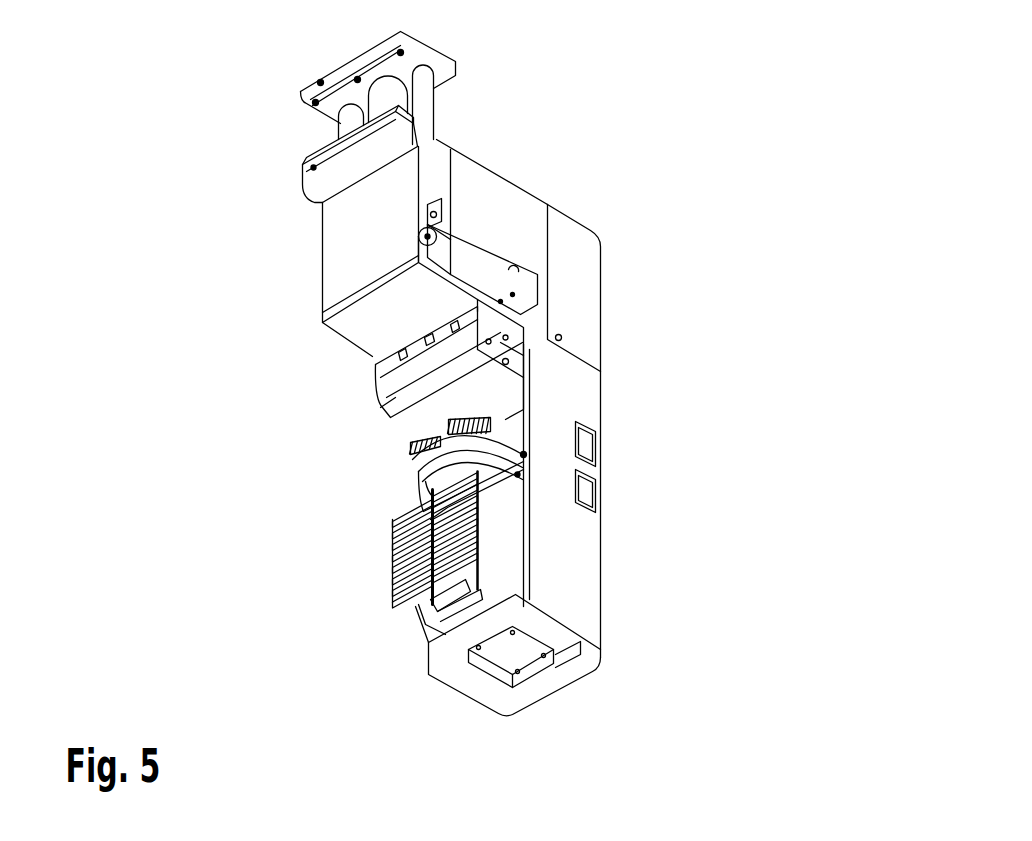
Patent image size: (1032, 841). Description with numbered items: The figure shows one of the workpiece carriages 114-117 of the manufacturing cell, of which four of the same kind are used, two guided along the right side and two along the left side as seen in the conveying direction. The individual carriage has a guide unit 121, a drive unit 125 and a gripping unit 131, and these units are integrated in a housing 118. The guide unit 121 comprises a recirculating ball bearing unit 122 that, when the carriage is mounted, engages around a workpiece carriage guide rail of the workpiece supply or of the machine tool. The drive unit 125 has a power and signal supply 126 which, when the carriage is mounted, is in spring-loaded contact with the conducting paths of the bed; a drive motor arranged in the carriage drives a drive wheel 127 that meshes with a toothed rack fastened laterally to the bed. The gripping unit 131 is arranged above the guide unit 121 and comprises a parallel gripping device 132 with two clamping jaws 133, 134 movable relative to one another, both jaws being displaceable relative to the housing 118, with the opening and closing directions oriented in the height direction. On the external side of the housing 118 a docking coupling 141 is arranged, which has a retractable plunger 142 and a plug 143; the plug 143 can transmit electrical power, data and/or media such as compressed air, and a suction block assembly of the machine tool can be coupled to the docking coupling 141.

The clamping jaw 133 is at (313, 82).
The gripping unit 131 is at (299, 117).
The parallel gripping device 132 is at (458, 103).
The clamping jaw 134 is at (302, 166).
The workpiece carriage 114-117 is at (578, 195).
The plug 143 is at (432, 216).
The retractable plunger 142 is at (428, 237).
The docking coupling 141 is at (540, 280).
The housing 118 is at (570, 377).
The recirculating ball bearing unit 122 is at (420, 380).
The guide unit 121 is at (360, 417).
The drive wheel 127 is at (412, 455).
The drive unit 125 is at (390, 505).
The power and signal supply 126 is at (390, 567).